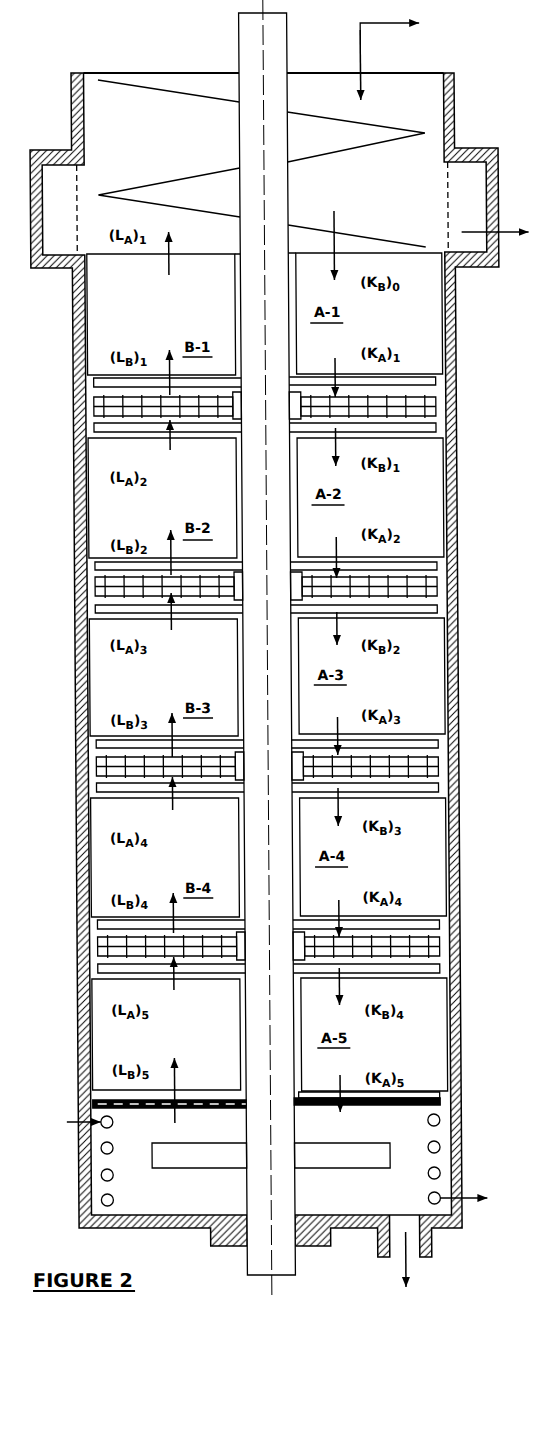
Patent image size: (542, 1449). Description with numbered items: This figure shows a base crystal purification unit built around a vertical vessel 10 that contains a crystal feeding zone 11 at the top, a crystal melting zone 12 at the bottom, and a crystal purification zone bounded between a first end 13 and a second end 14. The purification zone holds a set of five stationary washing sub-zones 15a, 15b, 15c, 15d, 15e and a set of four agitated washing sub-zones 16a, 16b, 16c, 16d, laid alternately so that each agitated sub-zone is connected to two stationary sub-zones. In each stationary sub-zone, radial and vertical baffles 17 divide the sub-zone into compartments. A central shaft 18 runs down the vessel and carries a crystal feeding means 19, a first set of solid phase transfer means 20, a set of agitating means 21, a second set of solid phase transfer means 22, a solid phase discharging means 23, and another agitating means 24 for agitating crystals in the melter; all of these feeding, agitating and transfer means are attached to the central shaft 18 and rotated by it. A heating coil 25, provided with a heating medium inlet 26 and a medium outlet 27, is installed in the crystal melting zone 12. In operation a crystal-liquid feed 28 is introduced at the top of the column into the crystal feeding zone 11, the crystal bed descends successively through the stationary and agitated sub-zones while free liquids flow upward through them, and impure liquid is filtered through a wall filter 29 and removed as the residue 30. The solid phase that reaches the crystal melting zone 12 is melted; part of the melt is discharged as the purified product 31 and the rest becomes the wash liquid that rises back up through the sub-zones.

The vertical vessel 10 is at (77, 652).
The crystal feeding zone 11 is at (354, 191).
The crystal melting zone 12 is at (336, 1201).
The first end 13 is at (220, 249).
The second end 14 is at (197, 1090).
The stationary washing sub-zone 15a is at (428, 314).
The stationary washing sub-zone 15b is at (429, 497).
The stationary washing sub-zone 15c is at (428, 675).
The stationary washing sub-zone 15d is at (427, 857).
The stationary washing sub-zone 15e is at (427, 1034).
The agitated washing sub-zone 16a is at (432, 409).
The agitated washing sub-zone 16b is at (431, 592).
The agitated washing sub-zone 16c is at (430, 773).
The agitated washing sub-zone 16d is at (429, 953).
The radial and vertical baffles 17 is at (101, 315).
The central shaft 18 is at (247, 30).
The crystal feeding means 19 is at (217, 99).
The first set of solid phase transfer means 20 is at (88, 383).
The set of agitating means 21 is at (88, 405).
The second set of solid phase transfer means 22 is at (88, 428).
The solid phase discharging means 23 is at (115, 1100).
The agitating means 24 is at (165, 1197).
The heating coil 25 is at (94, 1151).
The inlet 26 is at (70, 1123).
The medium outlet 27 is at (469, 1188).
The crystal-liquid feed 28 is at (401, 57).
The wall filter 29 is at (446, 222).
The residue 30 is at (496, 218).
The purified product 31 is at (422, 1260).